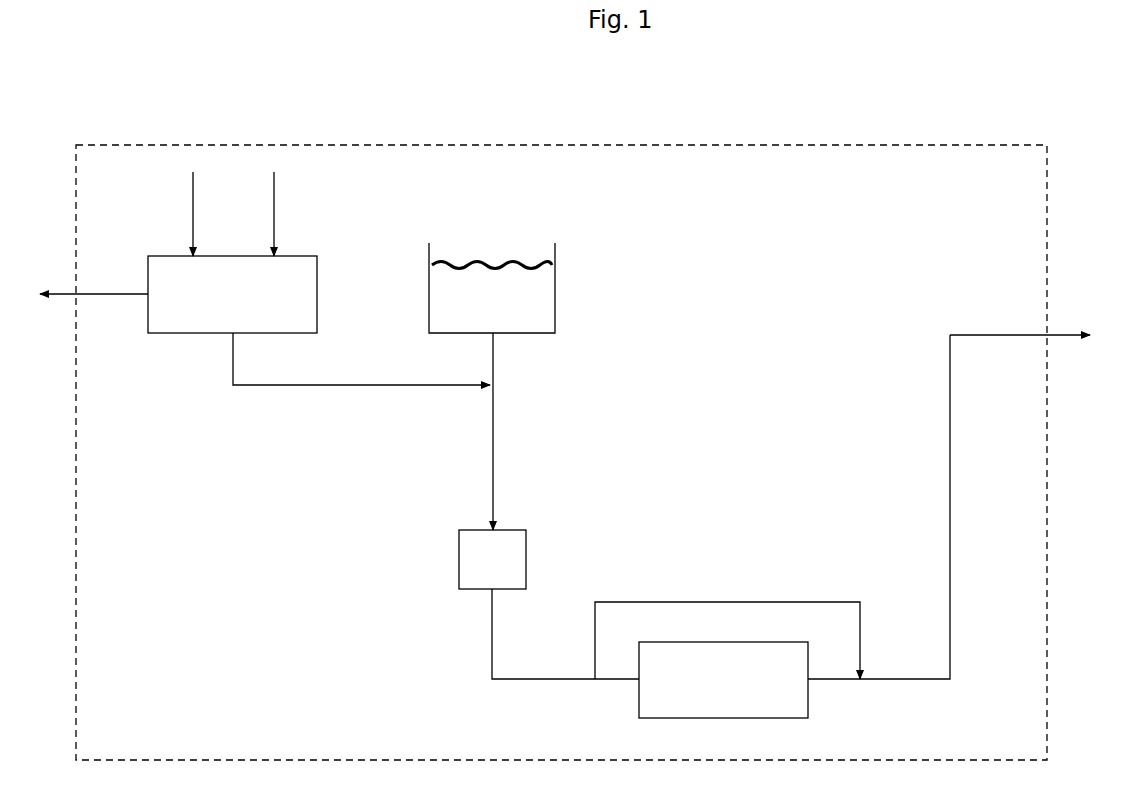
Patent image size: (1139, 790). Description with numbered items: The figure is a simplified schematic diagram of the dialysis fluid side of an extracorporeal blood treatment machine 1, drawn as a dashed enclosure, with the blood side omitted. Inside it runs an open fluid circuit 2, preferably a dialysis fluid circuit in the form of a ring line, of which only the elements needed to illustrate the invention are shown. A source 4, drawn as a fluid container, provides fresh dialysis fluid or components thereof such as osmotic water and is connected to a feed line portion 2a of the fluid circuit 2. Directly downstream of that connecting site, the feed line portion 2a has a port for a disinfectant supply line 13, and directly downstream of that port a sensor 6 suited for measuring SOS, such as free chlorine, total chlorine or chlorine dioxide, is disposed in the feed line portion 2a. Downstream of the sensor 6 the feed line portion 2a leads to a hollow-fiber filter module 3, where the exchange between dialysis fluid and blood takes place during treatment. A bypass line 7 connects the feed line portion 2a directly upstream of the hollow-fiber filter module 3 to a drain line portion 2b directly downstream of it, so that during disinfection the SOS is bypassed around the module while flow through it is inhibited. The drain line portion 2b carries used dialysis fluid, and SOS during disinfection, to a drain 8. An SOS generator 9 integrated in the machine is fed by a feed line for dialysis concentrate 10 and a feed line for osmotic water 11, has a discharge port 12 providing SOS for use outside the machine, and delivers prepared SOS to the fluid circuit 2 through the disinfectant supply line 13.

The extracorporeal blood treatment machine 1 is at (1048, 243).
The fluid circuit 2 is at (963, 555).
The feed line portion 2a is at (520, 431).
The drain line portion 2b is at (879, 507).
The hollow-fiber filter module 3 is at (723, 680).
The source 4 is at (492, 288).
The sensor 6 is at (549, 604).
The bypass line 7 is at (727, 619).
The drain 8 is at (1036, 336).
The SOS generator 9 is at (232, 294).
The feed line for dialysis concentrate 10 is at (170, 214).
The feed line for osmotic water 11 is at (251, 214).
The discharge port 12 is at (94, 317).
The disinfectant supply line 13 is at (361, 382).